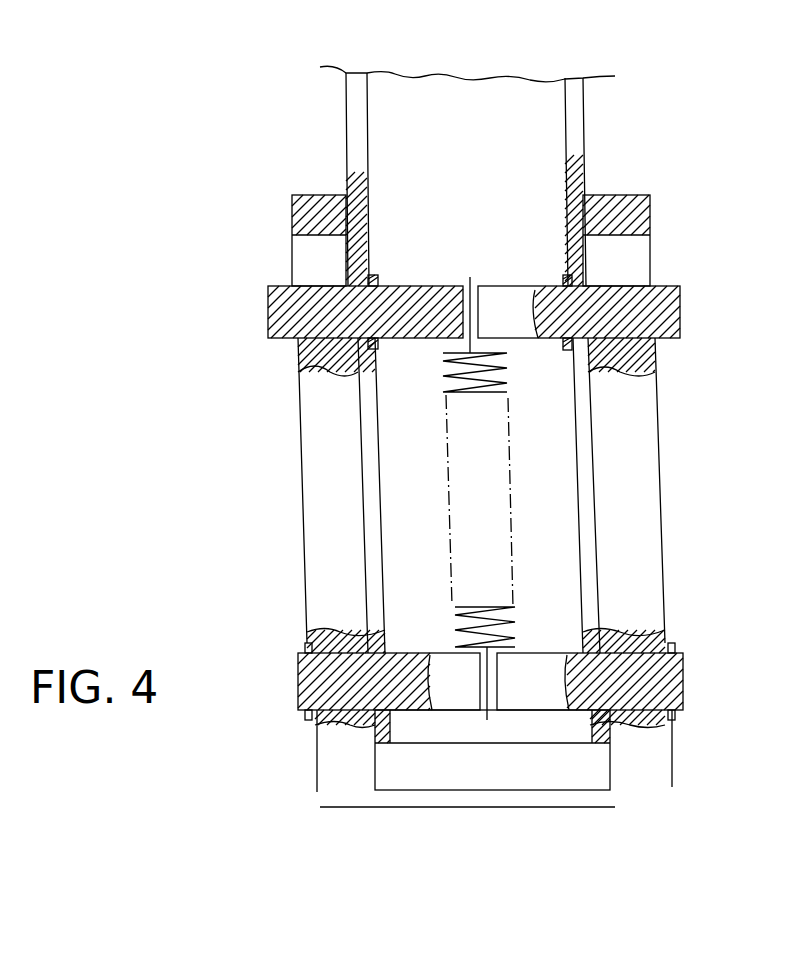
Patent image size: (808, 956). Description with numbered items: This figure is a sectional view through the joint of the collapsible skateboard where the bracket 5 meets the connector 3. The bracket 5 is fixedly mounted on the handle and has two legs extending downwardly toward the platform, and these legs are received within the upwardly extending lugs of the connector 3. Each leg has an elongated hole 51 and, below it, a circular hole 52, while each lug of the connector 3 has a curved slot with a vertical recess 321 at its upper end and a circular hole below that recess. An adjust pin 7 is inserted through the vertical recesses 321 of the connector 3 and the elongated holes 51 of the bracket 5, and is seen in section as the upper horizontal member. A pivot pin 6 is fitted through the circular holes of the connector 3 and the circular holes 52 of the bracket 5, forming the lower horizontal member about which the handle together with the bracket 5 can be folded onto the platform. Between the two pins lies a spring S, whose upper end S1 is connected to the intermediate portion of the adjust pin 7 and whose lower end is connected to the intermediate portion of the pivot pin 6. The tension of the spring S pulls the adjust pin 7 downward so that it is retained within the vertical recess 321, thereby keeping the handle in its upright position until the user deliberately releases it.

The bracket 5 is at (350, 117).
The vertical recess 321 is at (302, 260).
The elongated hole 51 is at (363, 251).
The adjust pin 7 is at (673, 325).
The upper end of the spring S1 is at (469, 272).
The spring S is at (447, 495).
The circular hole 52 is at (383, 652).
The pivot pin 6 is at (683, 677).
The connector 3 is at (333, 752).